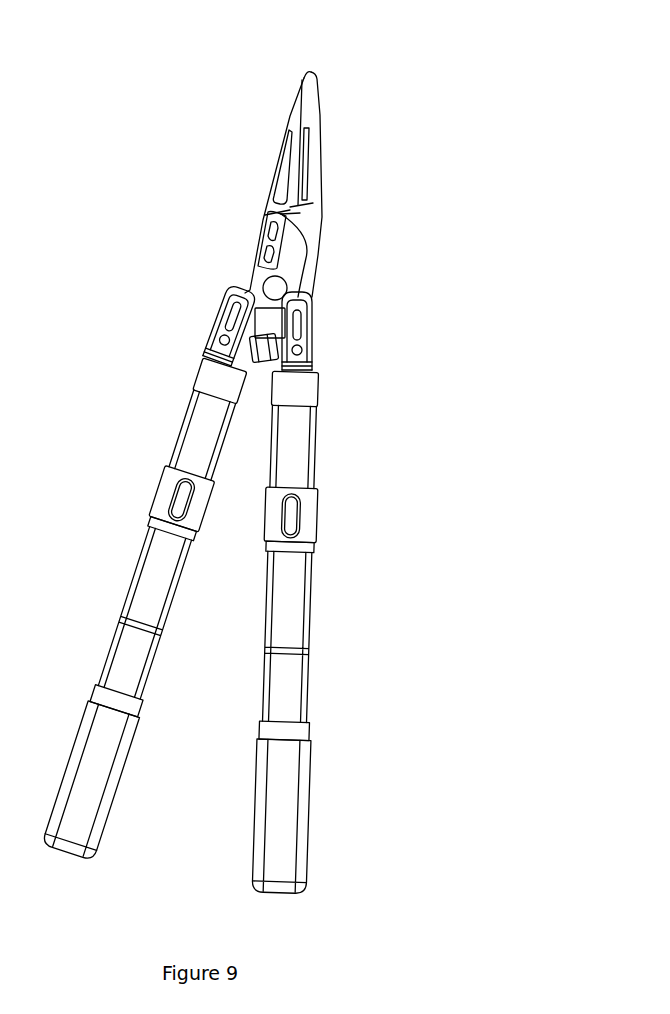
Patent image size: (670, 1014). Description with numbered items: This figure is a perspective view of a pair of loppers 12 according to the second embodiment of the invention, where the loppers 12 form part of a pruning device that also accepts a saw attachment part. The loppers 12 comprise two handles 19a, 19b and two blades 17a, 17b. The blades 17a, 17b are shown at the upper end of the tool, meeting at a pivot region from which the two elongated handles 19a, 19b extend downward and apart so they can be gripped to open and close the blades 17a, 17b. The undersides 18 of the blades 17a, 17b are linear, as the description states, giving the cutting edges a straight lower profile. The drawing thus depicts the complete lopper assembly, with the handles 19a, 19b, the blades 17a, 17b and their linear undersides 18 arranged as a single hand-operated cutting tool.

The loppers 12 is at (397, 195).
The blade 17a is at (291, 115).
The blade 17b is at (320, 115).
The undersides of blades 18 is at (270, 308).
The handle 19a is at (285, 810).
The handle 19b is at (87, 805).